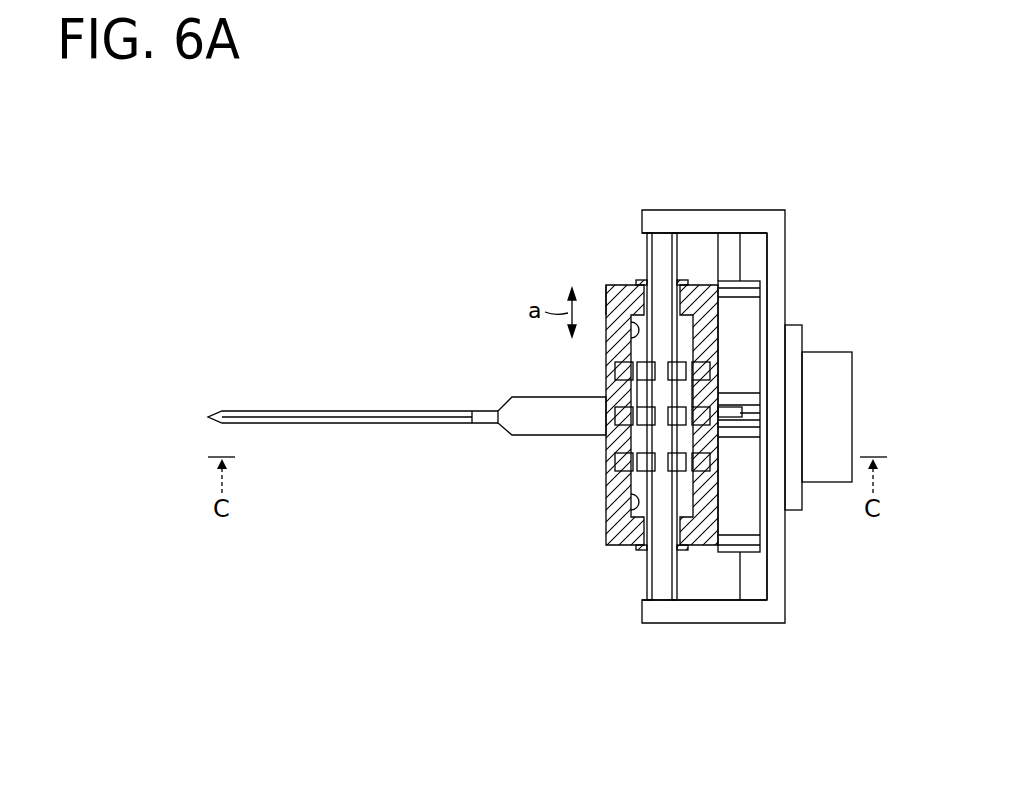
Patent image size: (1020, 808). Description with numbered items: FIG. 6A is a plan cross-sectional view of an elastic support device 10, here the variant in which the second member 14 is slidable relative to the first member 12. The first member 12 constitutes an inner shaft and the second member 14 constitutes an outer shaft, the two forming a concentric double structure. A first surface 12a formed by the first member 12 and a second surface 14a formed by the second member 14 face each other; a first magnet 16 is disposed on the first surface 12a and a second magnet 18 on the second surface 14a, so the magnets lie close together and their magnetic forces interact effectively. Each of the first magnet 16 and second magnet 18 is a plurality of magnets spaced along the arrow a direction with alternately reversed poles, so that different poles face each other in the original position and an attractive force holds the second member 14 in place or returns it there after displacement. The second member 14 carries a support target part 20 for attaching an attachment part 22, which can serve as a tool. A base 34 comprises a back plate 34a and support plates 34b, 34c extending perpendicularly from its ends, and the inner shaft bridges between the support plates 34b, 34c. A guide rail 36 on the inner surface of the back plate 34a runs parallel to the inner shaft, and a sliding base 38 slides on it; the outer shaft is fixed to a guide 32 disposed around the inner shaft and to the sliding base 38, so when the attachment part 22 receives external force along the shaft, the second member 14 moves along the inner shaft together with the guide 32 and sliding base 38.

The elastic support device 10 is at (625, 112).
The first member 12 is at (652, 571).
The first surface 12a is at (636, 440).
The second member 14 is at (610, 517).
The second surface 14a is at (614, 316).
The first magnet 16 is at (671, 360).
The second magnet 18 is at (706, 358).
The support target part 20 is at (553, 404).
The attachment part 22 is at (394, 411).
The guide 32 is at (645, 283).
The base 34 is at (792, 236).
The back plate 34a is at (780, 292).
The support plate 34b is at (722, 217).
The support plate 34c is at (724, 612).
The guide rail 36 is at (752, 265).
The sliding base 38 is at (752, 316).